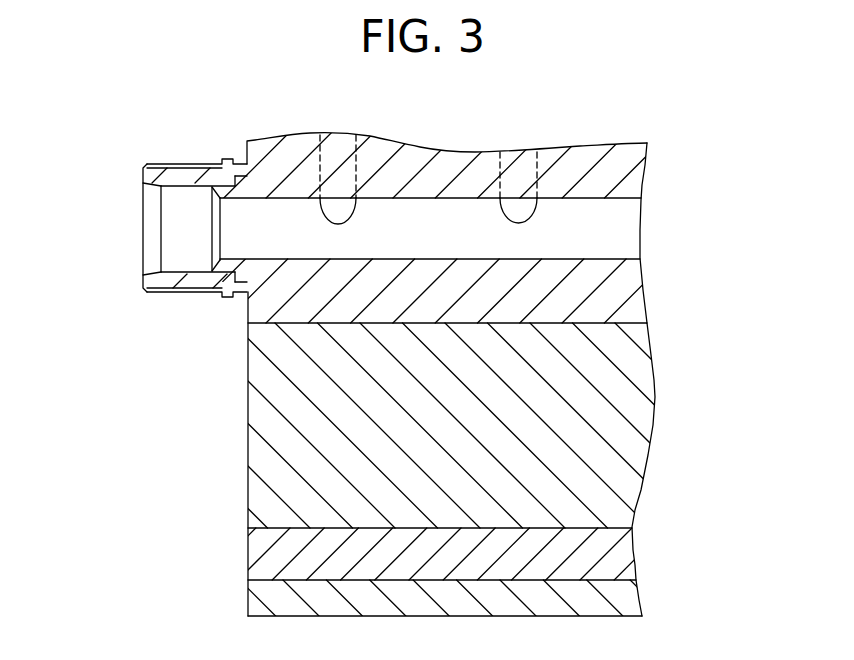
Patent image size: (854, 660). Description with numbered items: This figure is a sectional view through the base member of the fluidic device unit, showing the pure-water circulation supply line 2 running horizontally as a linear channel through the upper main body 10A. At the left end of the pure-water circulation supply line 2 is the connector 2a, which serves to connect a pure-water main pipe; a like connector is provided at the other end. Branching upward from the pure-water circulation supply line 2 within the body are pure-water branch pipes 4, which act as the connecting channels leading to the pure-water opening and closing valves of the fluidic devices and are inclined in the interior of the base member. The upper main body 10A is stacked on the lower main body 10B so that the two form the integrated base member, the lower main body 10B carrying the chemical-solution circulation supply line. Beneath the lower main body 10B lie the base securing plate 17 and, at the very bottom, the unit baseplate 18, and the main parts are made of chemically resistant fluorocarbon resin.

The pure-water circulation supply line 2 is at (618, 232).
The connector 2a is at (142, 292).
The pure-water branch pipes 4 is at (338, 207).
The upper main body 10A is at (618, 294).
The lower main body 10B is at (618, 410).
The base securing plate 17 is at (618, 555).
The unit baseplate 18 is at (618, 602).